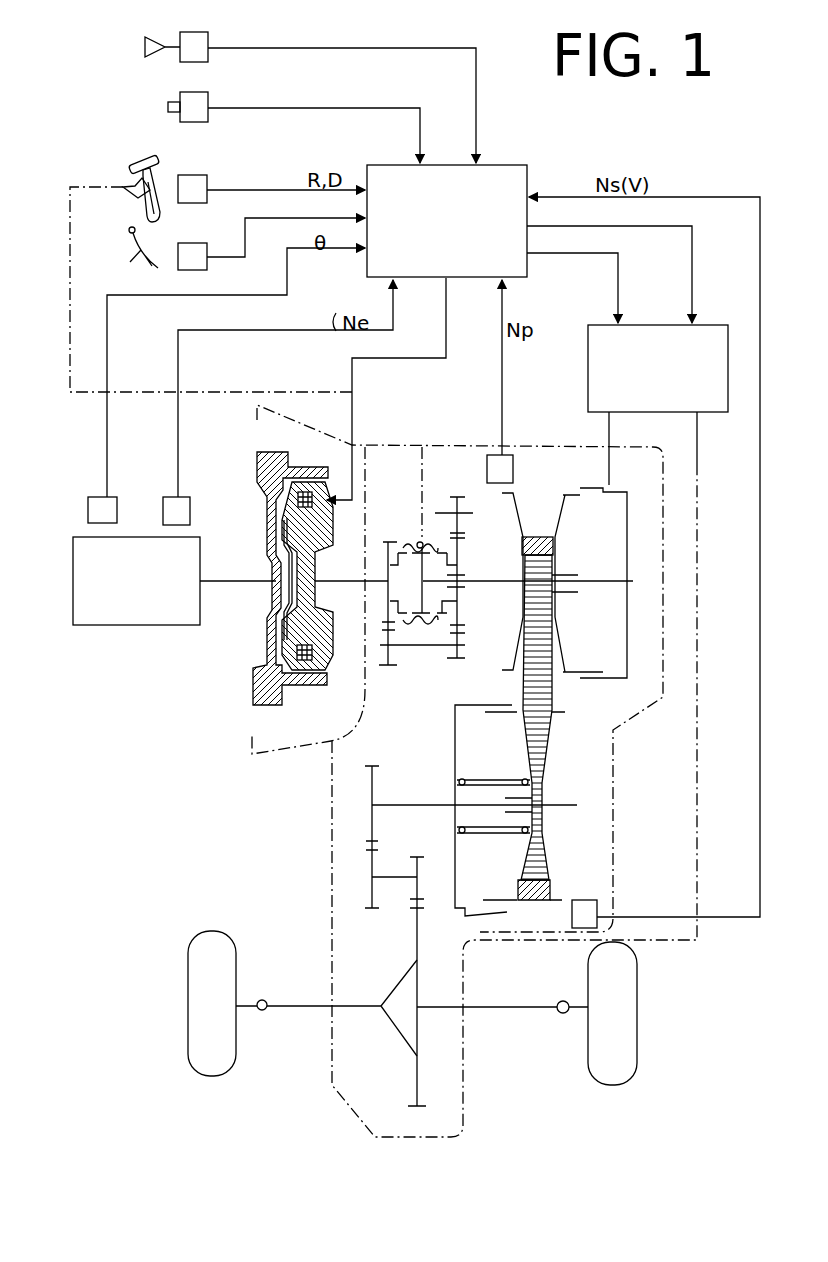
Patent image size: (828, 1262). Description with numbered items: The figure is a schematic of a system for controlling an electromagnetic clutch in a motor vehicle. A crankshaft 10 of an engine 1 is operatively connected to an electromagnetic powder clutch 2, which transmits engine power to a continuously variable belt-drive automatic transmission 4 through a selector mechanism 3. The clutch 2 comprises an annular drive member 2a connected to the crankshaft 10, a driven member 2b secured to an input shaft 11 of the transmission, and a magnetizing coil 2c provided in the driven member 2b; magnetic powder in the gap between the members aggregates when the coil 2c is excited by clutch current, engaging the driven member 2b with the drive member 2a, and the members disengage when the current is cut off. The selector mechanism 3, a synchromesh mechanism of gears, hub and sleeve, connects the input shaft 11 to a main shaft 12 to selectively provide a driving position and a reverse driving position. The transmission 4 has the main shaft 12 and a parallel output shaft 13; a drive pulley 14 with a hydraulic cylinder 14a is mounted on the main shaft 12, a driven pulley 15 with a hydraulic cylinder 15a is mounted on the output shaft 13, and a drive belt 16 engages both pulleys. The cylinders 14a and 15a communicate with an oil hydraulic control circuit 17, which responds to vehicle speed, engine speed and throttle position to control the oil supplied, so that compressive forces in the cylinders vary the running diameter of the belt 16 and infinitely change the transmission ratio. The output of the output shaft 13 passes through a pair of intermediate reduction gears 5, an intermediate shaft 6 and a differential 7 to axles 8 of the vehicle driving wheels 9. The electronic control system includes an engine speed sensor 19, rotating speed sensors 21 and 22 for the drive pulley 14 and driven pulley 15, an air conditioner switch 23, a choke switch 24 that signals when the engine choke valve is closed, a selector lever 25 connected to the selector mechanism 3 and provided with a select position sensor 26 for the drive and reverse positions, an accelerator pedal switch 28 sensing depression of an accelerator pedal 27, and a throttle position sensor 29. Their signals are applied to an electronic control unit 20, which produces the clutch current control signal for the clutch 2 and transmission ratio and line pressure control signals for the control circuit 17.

The engine 1 is at (100, 625).
The electromagnetic powder clutch 2 is at (283, 571).
The annular drive member 2a is at (257, 462).
The driven member 2b is at (330, 530).
The magnetizing coil 2c is at (318, 490).
The selector mechanism 3 is at (405, 532).
The continuously variable belt-drive automatic transmission 4 is at (541, 689).
The intermediate reduction gears 5 is at (372, 762).
The intermediate shaft 6 is at (388, 877).
The differential 7 is at (401, 980).
The axles 8 is at (306, 1005).
The vehicle driving wheels 9 is at (236, 1045).
The crankshaft 10 is at (245, 581).
The input shaft 11 is at (336, 581).
The main shaft 12 is at (500, 582).
The output shaft 13 is at (413, 803).
The drive pulley 14 is at (520, 527).
The hydraulic cylinder 14a is at (616, 553).
The driven pulley 15 is at (551, 720).
The hydraulic cylinder 15a is at (457, 722).
The drive belt 16 is at (522, 696).
The oil hydraulic control circuit 17 is at (588, 372).
The engine speed sensor 19 is at (170, 496).
The electronic control unit 20 is at (522, 160).
The rotating speed sensor 21 is at (513, 470).
The rotating speed sensor 22 is at (586, 900).
The air conditioner switch 23 is at (208, 100).
The choke switch 24 is at (208, 40).
The selector lever 25 is at (128, 167).
The select position sensor 26 is at (207, 182).
The accelerator pedal 27 is at (133, 258).
The accelerator pedal switch 28 is at (207, 250).
The throttle position sensor 29 is at (100, 497).